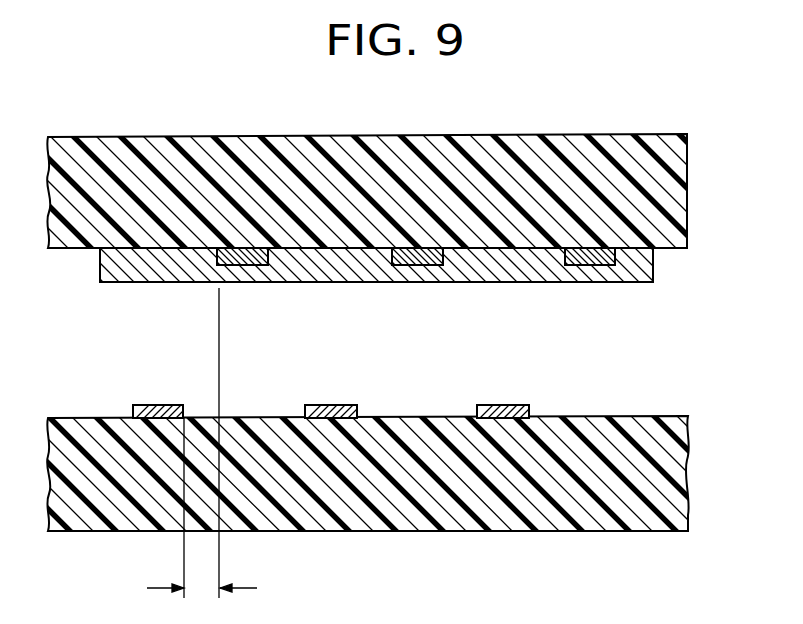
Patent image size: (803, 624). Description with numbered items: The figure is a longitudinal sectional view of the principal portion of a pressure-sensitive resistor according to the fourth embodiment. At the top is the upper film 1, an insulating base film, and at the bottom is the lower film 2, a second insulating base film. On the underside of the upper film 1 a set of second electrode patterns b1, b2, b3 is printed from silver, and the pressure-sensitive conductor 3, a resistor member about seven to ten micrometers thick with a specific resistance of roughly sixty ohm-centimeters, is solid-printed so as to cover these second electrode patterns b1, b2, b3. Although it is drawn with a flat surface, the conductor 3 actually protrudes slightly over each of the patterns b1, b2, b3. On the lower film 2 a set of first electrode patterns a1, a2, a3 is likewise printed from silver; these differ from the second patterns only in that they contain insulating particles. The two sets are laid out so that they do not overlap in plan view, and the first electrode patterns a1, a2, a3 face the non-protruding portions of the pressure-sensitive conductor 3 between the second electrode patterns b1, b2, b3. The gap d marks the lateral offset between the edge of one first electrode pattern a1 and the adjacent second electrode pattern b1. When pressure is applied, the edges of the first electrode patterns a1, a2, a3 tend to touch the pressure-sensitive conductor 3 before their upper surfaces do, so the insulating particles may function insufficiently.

The upper film 1 is at (677, 189).
The lower film 2 is at (677, 472).
The pressure-sensitive conductor 3 is at (645, 265).
The first electrode pattern a1 is at (160, 405).
The first electrode pattern a2 is at (333, 405).
The first electrode pattern a3 is at (505, 405).
The second electrode pattern b1 is at (247, 255).
The second electrode pattern b2 is at (419, 255).
The second electrode pattern b3 is at (590, 255).
The gap d is at (202, 443).